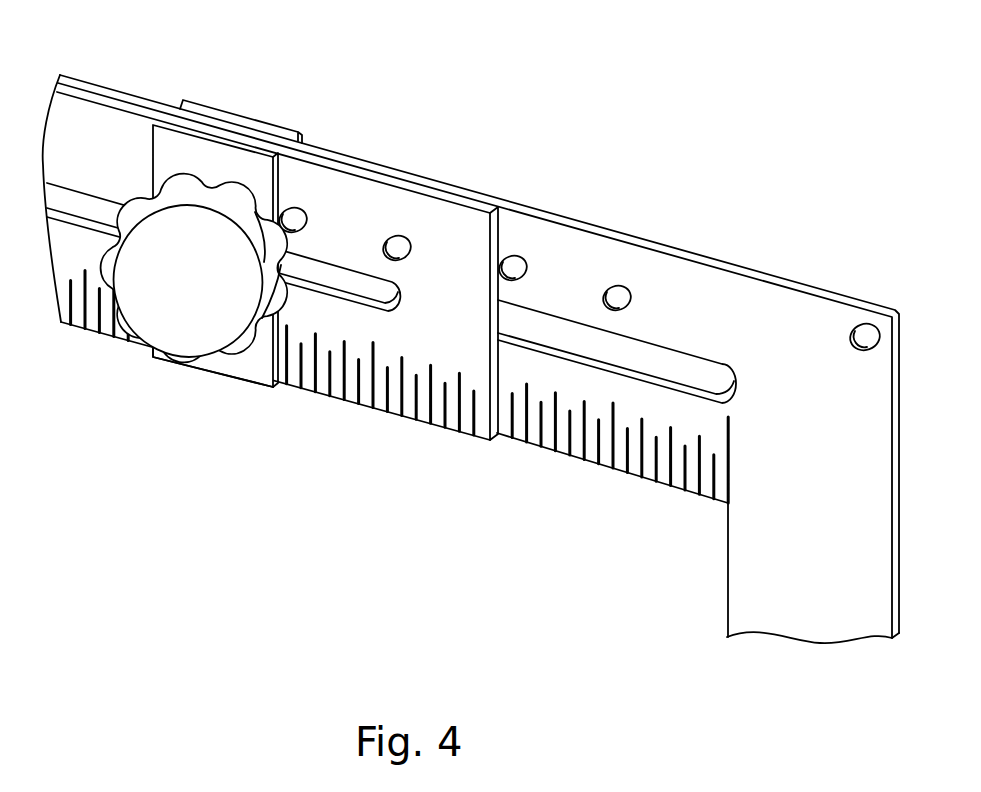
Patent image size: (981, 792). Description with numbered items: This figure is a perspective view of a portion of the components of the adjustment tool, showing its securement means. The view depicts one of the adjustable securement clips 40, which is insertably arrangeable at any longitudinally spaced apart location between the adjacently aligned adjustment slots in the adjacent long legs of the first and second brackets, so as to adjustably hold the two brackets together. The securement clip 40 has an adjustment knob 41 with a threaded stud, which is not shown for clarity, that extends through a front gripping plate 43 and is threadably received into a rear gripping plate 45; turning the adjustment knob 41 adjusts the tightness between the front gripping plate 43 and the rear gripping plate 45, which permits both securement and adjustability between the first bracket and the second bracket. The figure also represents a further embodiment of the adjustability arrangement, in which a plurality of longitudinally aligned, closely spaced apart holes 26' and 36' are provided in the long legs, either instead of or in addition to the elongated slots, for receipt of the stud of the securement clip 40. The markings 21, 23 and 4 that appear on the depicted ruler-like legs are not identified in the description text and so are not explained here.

The ruler 21 is at (471, 359).
The slot 23 is at (617, 351).
The gauge 4 is at (499, 323).
The holes 26' is at (565, 230).
The holes 36' is at (345, 178).
The securement clip 40 is at (257, 367).
The adjustment knob 41 is at (187, 333).
The front gripping plate 43 is at (252, 170).
The rear gripping plate 45 is at (197, 108).